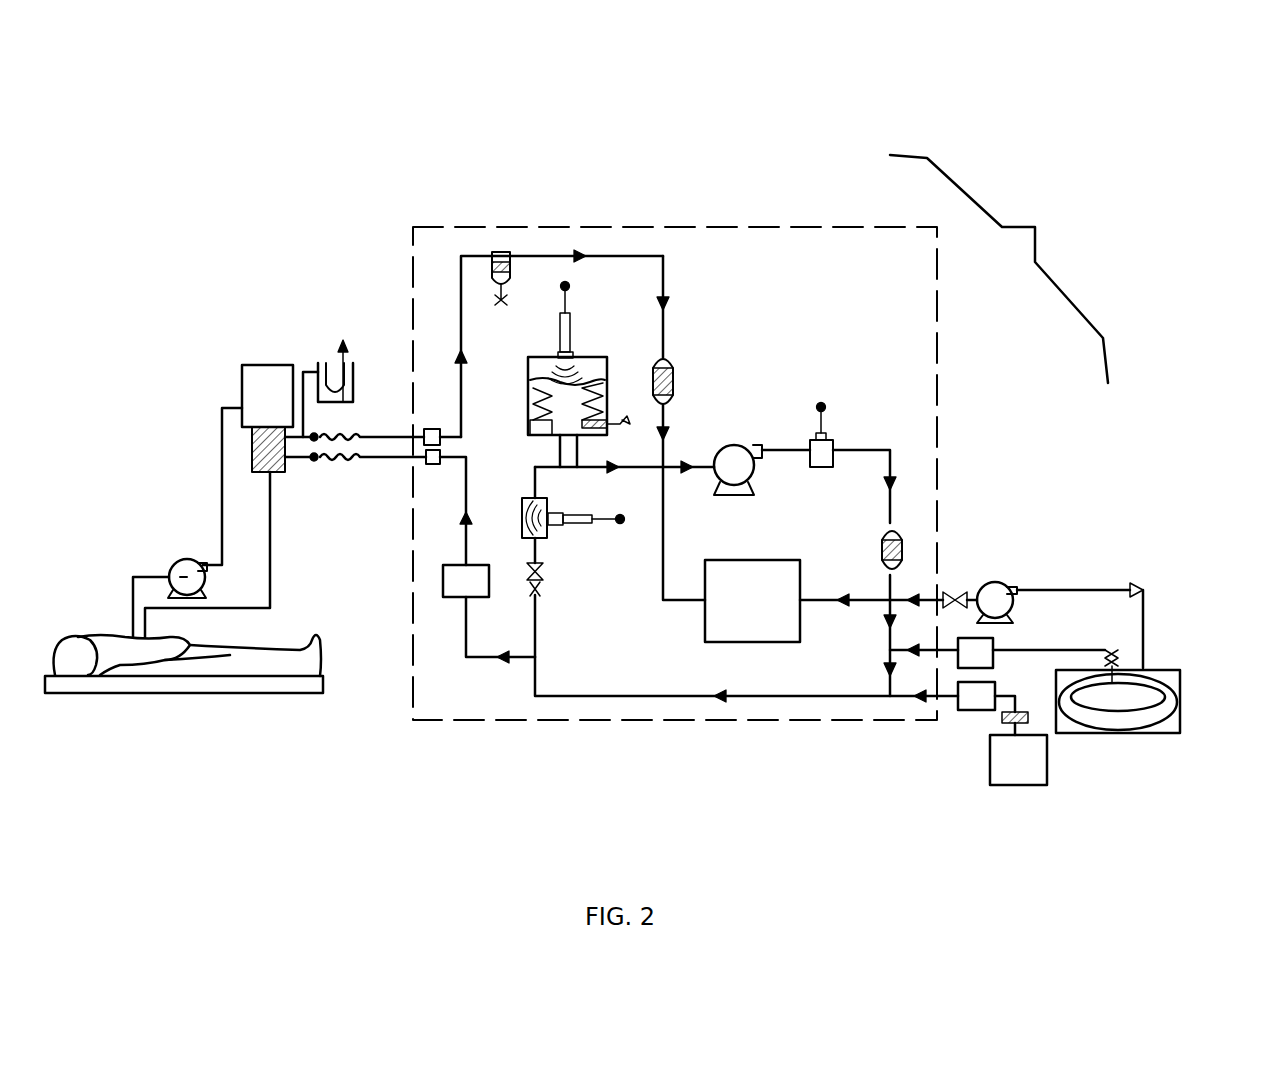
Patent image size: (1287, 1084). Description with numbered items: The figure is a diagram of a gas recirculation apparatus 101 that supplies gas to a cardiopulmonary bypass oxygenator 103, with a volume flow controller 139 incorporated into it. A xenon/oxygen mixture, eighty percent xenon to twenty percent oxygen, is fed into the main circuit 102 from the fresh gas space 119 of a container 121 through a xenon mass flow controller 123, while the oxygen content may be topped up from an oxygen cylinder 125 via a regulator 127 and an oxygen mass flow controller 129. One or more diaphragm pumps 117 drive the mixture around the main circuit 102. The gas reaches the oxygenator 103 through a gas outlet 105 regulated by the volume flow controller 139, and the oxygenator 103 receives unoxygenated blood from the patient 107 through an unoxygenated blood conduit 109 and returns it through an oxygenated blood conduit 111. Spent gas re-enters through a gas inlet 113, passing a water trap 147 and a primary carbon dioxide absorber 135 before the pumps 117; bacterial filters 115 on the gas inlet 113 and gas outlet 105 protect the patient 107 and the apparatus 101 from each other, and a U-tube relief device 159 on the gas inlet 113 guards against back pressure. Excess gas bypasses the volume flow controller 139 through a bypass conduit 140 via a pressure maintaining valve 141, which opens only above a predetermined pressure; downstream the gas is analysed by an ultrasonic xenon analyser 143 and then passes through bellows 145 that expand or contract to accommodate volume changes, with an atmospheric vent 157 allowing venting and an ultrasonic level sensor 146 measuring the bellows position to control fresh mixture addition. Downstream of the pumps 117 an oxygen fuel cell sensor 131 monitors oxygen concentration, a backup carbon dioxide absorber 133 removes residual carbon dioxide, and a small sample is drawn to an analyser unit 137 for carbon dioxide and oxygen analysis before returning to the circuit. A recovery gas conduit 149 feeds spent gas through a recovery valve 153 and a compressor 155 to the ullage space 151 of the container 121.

The apparatus 101 is at (999, 269).
The main circuit 102 is at (461, 285).
The cardiopulmonary bypass oxygenator 103 is at (245, 440).
The gas outlet 105 is at (466, 488).
The patient 107 is at (105, 650).
The unoxygenated blood conduit 109 is at (222, 500).
The oxygenated blood conduit 111 is at (270, 527).
The gas inlet 113 is at (383, 437).
The bacterial filters 115 is at (430, 428).
The diaphragm pumps 117 is at (735, 460).
The fresh gas space 119 is at (1118, 702).
The container 121 is at (1150, 733).
The xenon mass flow controller 123 is at (1000, 650).
The oxygen cylinder 125 is at (1000, 765).
The regulator 127 is at (1015, 725).
The oxygen mass flow controller 129 is at (970, 700).
The oxygen fuel cell sensor 131 is at (835, 450).
The backup carbon dioxide absorber 133 is at (902, 545).
The primary carbon dioxide absorber 135 is at (672, 367).
The analyser unit 137 is at (768, 630).
The volume flow controller 139 is at (443, 582).
The bypass conduit 140 is at (537, 634).
The pressure maintaining valve 141 is at (540, 580).
The ultrasonic xenon analyser 143 is at (535, 498).
The bellows 145 is at (568, 398).
The ultrasonic level sensor 146 is at (566, 345).
The water trap 147 is at (500, 252).
The recovery gas conduit 149 is at (923, 590).
The ullage space 151 is at (1173, 700).
The recovery valve 153 is at (945, 605).
The compressor 155 is at (1020, 607).
The atmospheric vent 157 is at (620, 420).
The U-tube relief device 159 is at (335, 372).